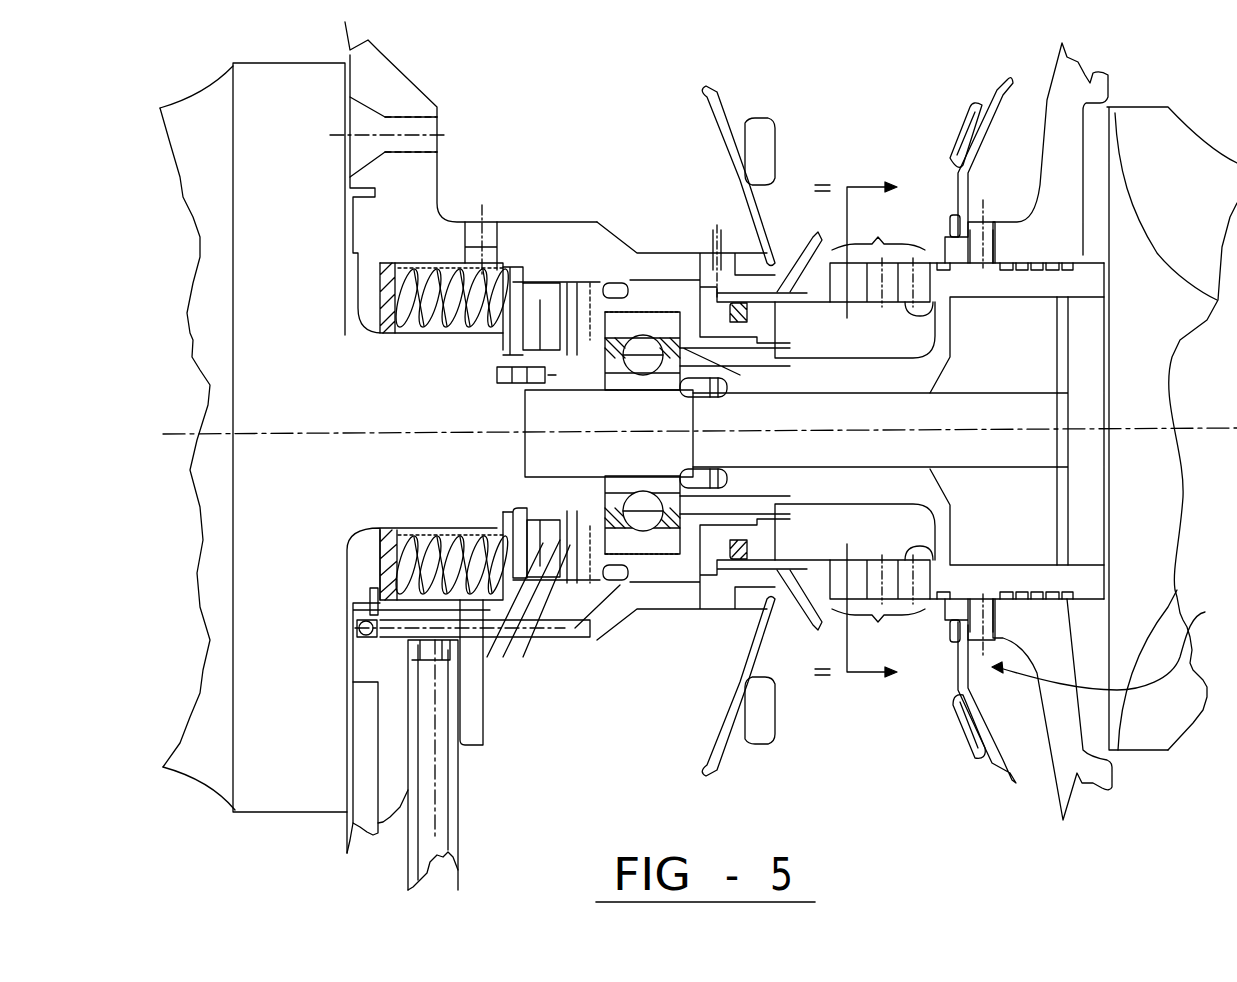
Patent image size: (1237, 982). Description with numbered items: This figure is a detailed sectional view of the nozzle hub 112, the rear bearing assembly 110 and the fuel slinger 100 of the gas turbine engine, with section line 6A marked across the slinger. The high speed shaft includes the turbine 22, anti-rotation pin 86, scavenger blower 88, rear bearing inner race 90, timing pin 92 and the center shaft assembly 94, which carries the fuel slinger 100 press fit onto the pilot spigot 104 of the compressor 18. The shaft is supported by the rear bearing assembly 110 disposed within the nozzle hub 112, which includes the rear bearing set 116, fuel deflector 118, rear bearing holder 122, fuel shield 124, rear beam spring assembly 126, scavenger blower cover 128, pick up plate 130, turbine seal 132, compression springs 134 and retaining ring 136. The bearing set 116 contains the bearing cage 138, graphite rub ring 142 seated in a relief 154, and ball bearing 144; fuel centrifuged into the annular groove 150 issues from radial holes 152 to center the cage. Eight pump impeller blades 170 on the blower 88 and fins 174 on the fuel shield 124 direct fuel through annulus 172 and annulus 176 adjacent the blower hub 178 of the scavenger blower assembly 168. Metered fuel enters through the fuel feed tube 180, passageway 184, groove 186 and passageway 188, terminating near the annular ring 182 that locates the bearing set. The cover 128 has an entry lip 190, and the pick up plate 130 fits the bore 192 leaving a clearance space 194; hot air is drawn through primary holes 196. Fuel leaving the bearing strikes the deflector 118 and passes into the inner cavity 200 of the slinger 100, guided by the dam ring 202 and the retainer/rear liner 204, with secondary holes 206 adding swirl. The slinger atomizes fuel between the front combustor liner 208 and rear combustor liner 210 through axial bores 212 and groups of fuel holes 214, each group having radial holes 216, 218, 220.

The compressor 18 is at (1192, 201).
The turbine 22 is at (270, 230).
The anti-rotation pin 86 is at (540, 383).
The scavenger blower 88 is at (497, 657).
The rear bearing inner race 90 is at (622, 380).
The timing pin 92 is at (698, 387).
The center shaft assembly 94 is at (1112, 647).
The fuel slinger 100 is at (1042, 294).
The pilot spigot 104 is at (1087, 505).
The rear bearing assembly 110 is at (602, 205).
The nozzle hub 112 is at (420, 227).
The rear bearing set 116 is at (713, 235).
The fuel deflector 118 is at (765, 323).
The rear bearing holder 122 is at (745, 650).
The fuel shield 124 is at (580, 305).
The rear beam spring assembly 126 is at (645, 358).
The scavenger blower cover 128 is at (463, 747).
The pick up plate 130 is at (487, 522).
The turbine seal 132 is at (362, 337).
The compression springs 134 is at (440, 338).
The retaining ring 136 is at (368, 595).
The bearing cage 138 is at (727, 375).
The graphite rub ring 142 is at (660, 298).
The ball bearing 144 is at (657, 295).
The annular groove 150 is at (622, 510).
The radial holes 152 is at (628, 568).
The relief 154 is at (678, 543).
The scavenger blower assembly 168 is at (625, 720).
The pump impeller blades 170 is at (540, 320).
The annulus 172 is at (567, 577).
The fins 174 is at (607, 570).
The annulus 176 is at (597, 513).
The blower hub 178 is at (550, 487).
The fuel feed tube 180 is at (463, 807).
The annular ring 182 is at (603, 592).
The fuel passageway 184 is at (367, 643).
The groove 186 is at (590, 585).
The fuel passageway 188 is at (602, 284).
The entry lip 190 is at (493, 363).
The bore 192 is at (482, 262).
The clearance space 194 is at (512, 508).
The primary holes 196 is at (478, 220).
The inner cavity 200 is at (752, 718).
The dam ring 202 is at (743, 323).
The retainer/rear liner 204 is at (812, 238).
The secondary holes 206 is at (712, 250).
The front combustor liner 208 is at (972, 120).
The rear combustor liner 210 is at (728, 108).
The axial bores 212 is at (793, 533).
The fuel holes 214 is at (880, 429).
The radial hole 216 is at (920, 312).
The radial hole 218 is at (847, 302).
The radial hole 220 is at (877, 302).
The section line 6A is at (840, 434).